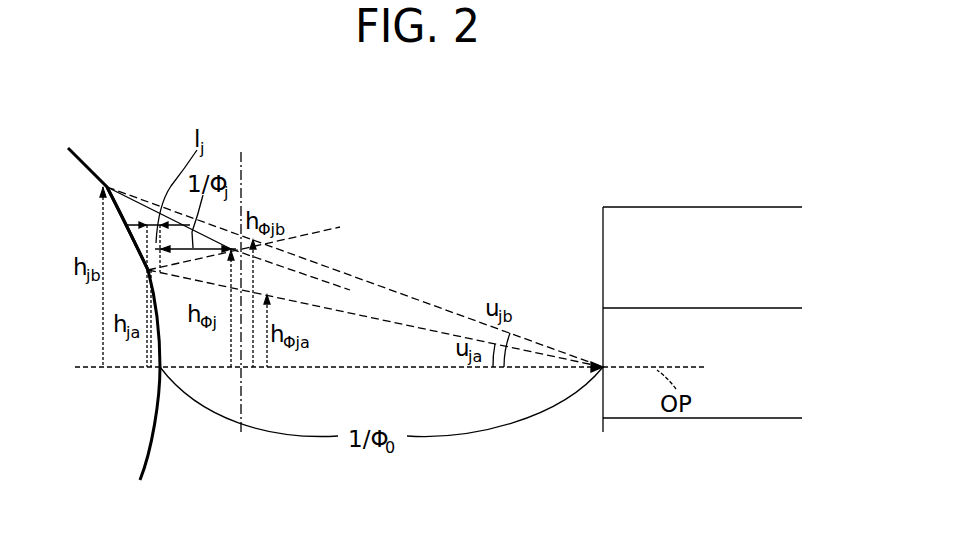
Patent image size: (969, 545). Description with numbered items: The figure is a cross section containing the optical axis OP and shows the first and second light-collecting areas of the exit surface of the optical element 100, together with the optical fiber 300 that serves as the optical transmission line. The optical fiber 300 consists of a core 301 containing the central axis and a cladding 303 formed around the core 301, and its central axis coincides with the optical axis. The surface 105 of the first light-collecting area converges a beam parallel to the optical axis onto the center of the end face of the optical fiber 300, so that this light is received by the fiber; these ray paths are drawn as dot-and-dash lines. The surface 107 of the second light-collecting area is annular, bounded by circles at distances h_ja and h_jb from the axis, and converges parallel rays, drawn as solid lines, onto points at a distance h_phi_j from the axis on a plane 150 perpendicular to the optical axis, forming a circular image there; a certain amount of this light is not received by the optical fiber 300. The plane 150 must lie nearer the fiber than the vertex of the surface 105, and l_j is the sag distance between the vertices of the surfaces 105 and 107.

The optical element 100 is at (82, 165).
The surface of the first light-collecting area 105 is at (102, 183).
The surface of the second light-collecting area 107 is at (141, 218).
The plane 150 is at (244, 180).
The optical fiber 300 is at (702, 278).
The cladding 303 is at (667, 232).
The core 301 is at (720, 345).